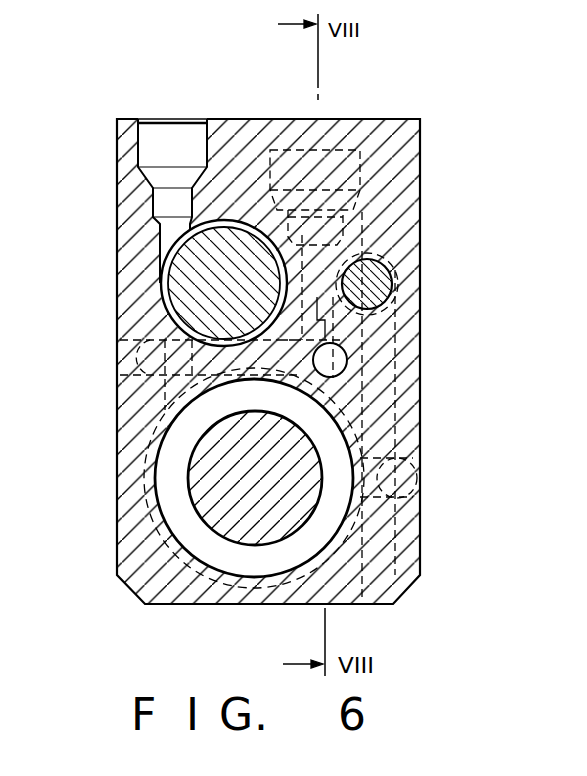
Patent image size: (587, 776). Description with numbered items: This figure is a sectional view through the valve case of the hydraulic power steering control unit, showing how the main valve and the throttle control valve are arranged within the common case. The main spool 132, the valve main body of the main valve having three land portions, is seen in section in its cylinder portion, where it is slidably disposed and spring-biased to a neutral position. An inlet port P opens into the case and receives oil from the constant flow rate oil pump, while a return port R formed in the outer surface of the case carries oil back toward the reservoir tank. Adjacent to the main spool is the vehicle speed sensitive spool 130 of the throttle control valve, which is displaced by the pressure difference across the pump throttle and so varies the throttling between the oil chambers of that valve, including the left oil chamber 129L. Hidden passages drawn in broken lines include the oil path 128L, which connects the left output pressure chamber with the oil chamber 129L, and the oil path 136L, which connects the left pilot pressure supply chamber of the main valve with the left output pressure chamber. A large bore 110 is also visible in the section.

The inlet port P is at (173, 146).
The main spool 132 is at (229, 235).
The return port R is at (346, 150).
The vehicle speed sensitive spool 130 is at (399, 266).
The left oil chamber 129L is at (398, 296).
The main bore 110 is at (265, 535).
The oil path 128L is at (400, 445).
The oil path 136L is at (150, 403).